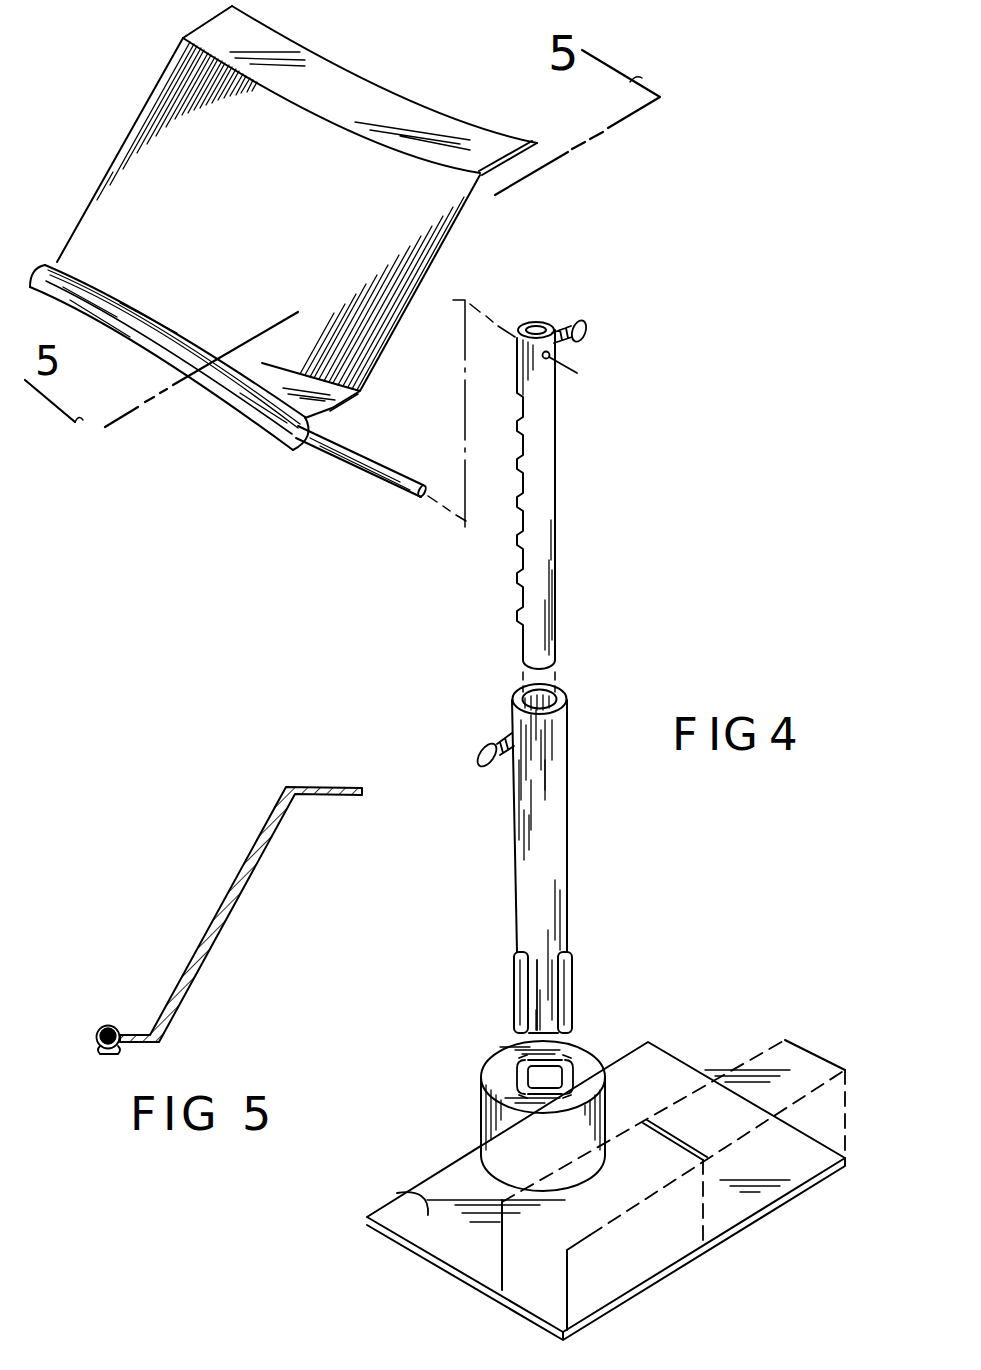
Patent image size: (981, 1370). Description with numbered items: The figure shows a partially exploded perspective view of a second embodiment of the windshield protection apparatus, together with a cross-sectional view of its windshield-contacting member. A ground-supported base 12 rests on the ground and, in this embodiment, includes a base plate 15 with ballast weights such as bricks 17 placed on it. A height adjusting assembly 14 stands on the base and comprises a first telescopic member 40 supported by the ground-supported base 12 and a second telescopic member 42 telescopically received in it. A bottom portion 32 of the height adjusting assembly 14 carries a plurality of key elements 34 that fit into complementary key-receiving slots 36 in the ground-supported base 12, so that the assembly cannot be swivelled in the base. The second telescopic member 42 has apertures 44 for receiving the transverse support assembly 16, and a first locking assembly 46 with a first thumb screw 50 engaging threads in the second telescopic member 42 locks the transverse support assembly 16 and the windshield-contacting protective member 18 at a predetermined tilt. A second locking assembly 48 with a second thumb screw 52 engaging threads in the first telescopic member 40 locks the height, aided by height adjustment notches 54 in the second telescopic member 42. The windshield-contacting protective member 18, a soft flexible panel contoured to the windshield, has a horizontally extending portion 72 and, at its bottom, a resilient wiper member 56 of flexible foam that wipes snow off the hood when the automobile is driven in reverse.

In FIG. 4, the ground-supported base 12 is at (490, 1133).
In FIG. 4, the height adjusting assembly 14 is at (573, 718).
In FIG. 4, the base plate 15 is at (396, 1192).
In FIG. 4, the transverse support assembly 16 is at (380, 468).
In FIG. 5, the transverse support assembly 16 is at (100, 1030).
In FIG. 4, the bricks 17 is at (775, 1085).
In FIG. 4, the windshield-contacting protective member 18 is at (157, 173).
In FIG. 5, the windshield-contacting protective member 18 is at (228, 893).
In FIG. 4, the bottom portion 32 is at (537, 990).
In FIG. 4, the key elements 34 is at (514, 1005).
In FIG. 4, the key-receiving slots 36 is at (520, 1073).
In FIG. 4, the first telescopic member 40 is at (547, 840).
In FIG. 4, the second telescopic member 42 is at (540, 570).
In FIG. 4, the apertures 44 is at (535, 373).
In FIG. 4, the first locking assembly 46 is at (545, 318).
In FIG. 4, the second locking assembly 48 is at (500, 718).
In FIG. 4, the first thumb screw 50 is at (586, 332).
In FIG. 4, the second thumb screw 52 is at (476, 768).
In FIG. 4, the height adjustment notches 54 is at (523, 545).
In FIG. 4, the resilient wiper member 56 is at (253, 420).
In FIG. 5, the resilient wiper member 56 is at (110, 1058).
In FIG. 4, the horizontally extending portion 72 is at (340, 65).